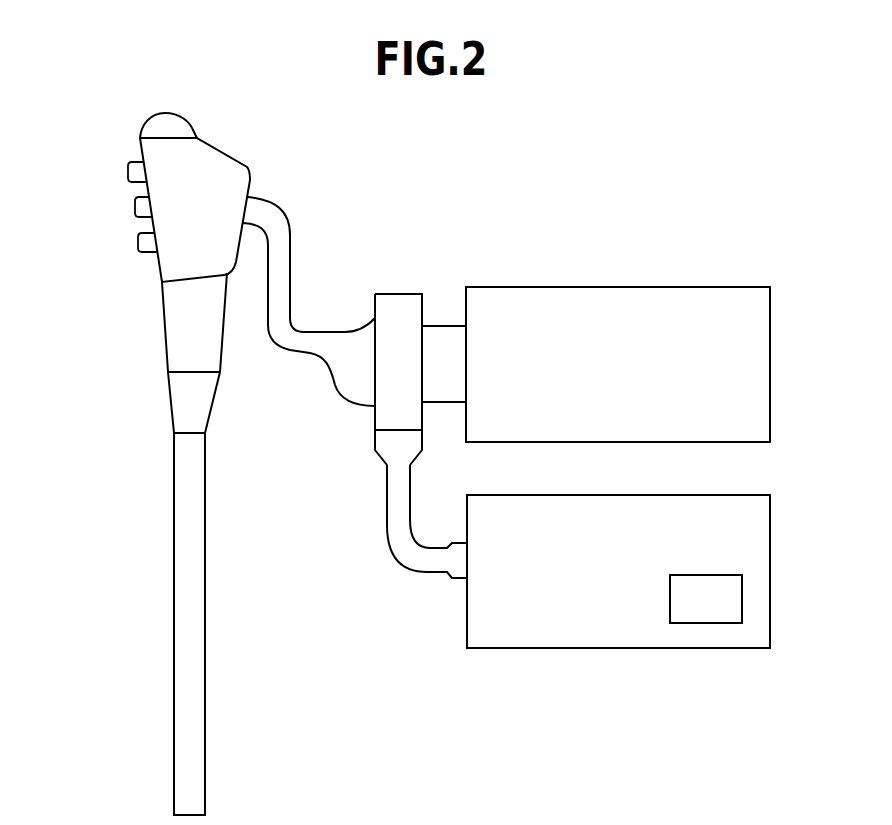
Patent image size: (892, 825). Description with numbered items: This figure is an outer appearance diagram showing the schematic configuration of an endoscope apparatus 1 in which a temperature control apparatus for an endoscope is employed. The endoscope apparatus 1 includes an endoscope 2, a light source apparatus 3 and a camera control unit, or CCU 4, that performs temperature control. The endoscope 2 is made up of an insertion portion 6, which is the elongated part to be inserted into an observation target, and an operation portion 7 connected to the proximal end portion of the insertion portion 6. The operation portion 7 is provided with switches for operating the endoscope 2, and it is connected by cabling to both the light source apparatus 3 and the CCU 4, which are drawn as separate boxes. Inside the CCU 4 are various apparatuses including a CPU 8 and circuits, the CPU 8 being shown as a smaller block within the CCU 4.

The endoscope apparatus 1 is at (528, 180).
The endoscope 2 is at (105, 360).
The light source apparatus 3 is at (770, 380).
The camera control unit (CCU) 4 is at (770, 597).
The insertion portion 6 is at (173, 585).
The operation portion 7 is at (242, 162).
The CPU 8 is at (705, 623).